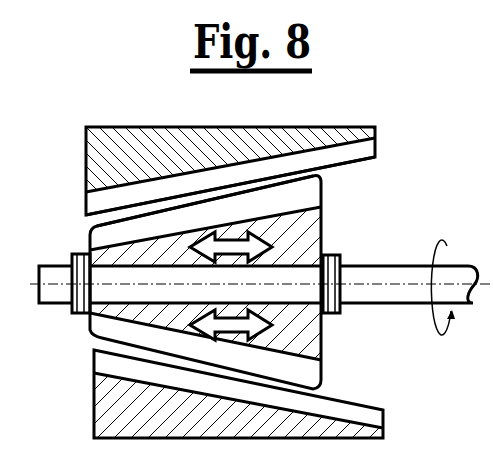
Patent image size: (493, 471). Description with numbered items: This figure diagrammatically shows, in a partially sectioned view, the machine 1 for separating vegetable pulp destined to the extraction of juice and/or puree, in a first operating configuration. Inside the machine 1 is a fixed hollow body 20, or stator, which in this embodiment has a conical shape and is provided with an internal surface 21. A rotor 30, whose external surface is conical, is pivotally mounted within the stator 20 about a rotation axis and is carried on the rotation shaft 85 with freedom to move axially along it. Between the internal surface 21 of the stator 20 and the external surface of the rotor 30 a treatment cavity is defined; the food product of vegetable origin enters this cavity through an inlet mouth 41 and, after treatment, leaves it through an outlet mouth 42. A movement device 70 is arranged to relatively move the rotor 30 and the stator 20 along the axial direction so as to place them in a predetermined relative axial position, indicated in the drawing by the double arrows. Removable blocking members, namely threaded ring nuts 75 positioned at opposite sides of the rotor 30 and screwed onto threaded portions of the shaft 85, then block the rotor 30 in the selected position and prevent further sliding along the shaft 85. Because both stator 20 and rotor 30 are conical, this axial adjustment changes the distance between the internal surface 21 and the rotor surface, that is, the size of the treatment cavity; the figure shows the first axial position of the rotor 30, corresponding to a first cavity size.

The machine 1 is at (110, 96).
The fixed hollow body 20 is at (368, 182).
The internal surface 21 is at (367, 160).
The rotor 30 is at (331, 345).
The inlet mouth 41 is at (80, 222).
The outlet mouth 42 is at (390, 396).
The movement device 70 is at (66, 328).
The threaded ring nut 75 is at (346, 251).
The rotation shaft 85 is at (405, 317).